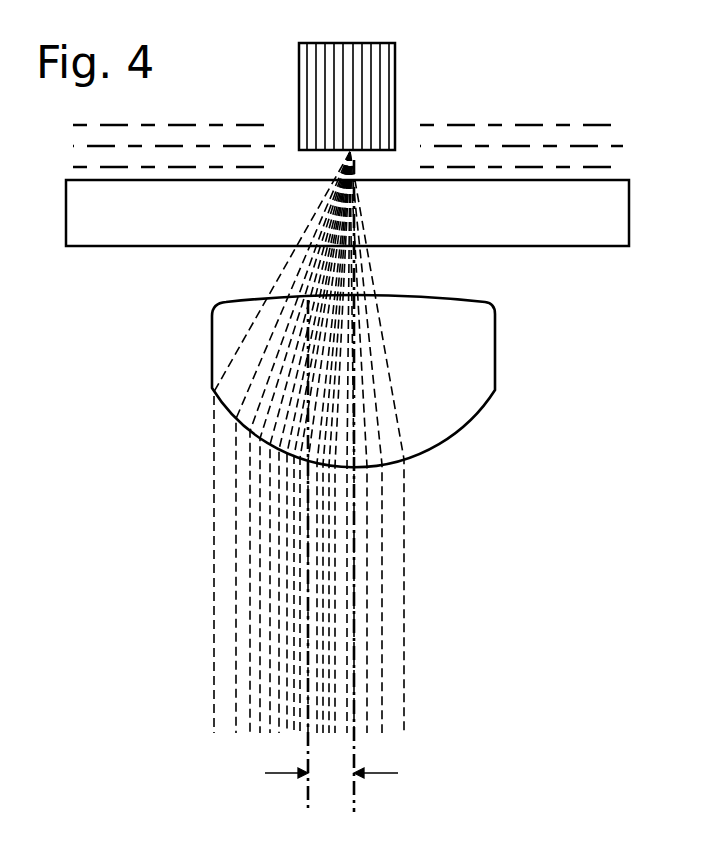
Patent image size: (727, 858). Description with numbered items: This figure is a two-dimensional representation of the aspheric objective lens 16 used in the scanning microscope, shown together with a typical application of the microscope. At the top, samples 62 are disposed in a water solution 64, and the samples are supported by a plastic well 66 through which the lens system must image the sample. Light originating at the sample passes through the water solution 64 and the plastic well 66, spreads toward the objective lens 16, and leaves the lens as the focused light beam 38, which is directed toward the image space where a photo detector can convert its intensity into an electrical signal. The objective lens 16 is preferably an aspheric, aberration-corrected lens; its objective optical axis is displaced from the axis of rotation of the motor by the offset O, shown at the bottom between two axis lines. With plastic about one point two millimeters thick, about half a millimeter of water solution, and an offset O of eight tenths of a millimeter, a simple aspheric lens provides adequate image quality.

The samples 62 is at (395, 88).
The water solution 64 is at (623, 145).
The plastic well 66 is at (629, 210).
The objective lens 16 is at (495, 348).
The focused light beam 38 is at (404, 575).
The offset O is at (380, 773).